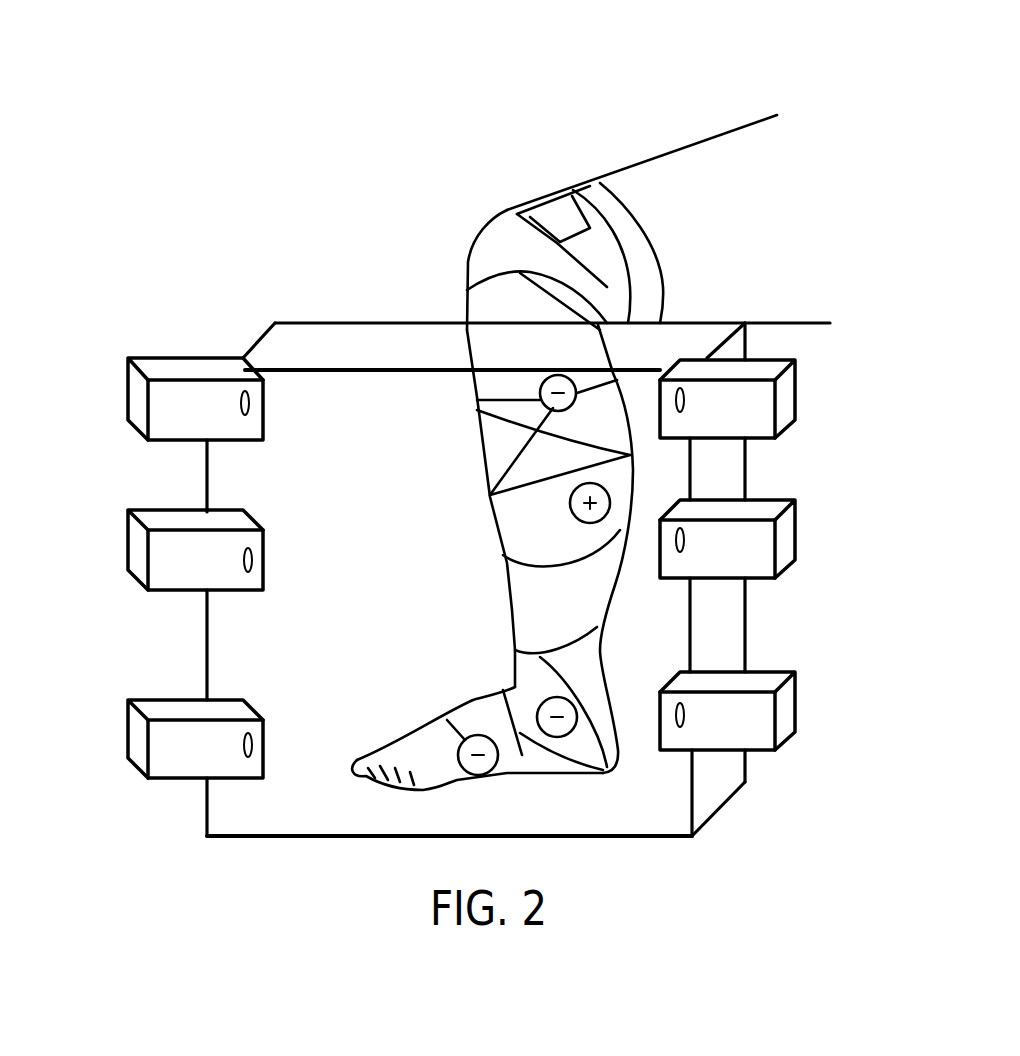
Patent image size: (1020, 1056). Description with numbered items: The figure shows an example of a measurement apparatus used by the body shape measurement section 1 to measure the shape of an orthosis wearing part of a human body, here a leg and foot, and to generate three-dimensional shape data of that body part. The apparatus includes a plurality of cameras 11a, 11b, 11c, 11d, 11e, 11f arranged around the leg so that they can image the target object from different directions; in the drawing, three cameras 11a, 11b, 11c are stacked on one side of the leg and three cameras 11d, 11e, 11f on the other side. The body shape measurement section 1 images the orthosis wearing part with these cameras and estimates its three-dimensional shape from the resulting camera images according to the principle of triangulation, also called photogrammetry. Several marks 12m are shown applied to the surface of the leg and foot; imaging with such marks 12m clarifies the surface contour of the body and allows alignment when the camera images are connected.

The body shape measurement section 1 is at (173, 102).
The camera 11a is at (790, 395).
The camera 11b is at (785, 537).
The camera 11c is at (785, 710).
The camera 11d is at (128, 395).
The camera 11e is at (128, 545).
The camera 11f is at (128, 735).
The mark 12m is at (545, 405).